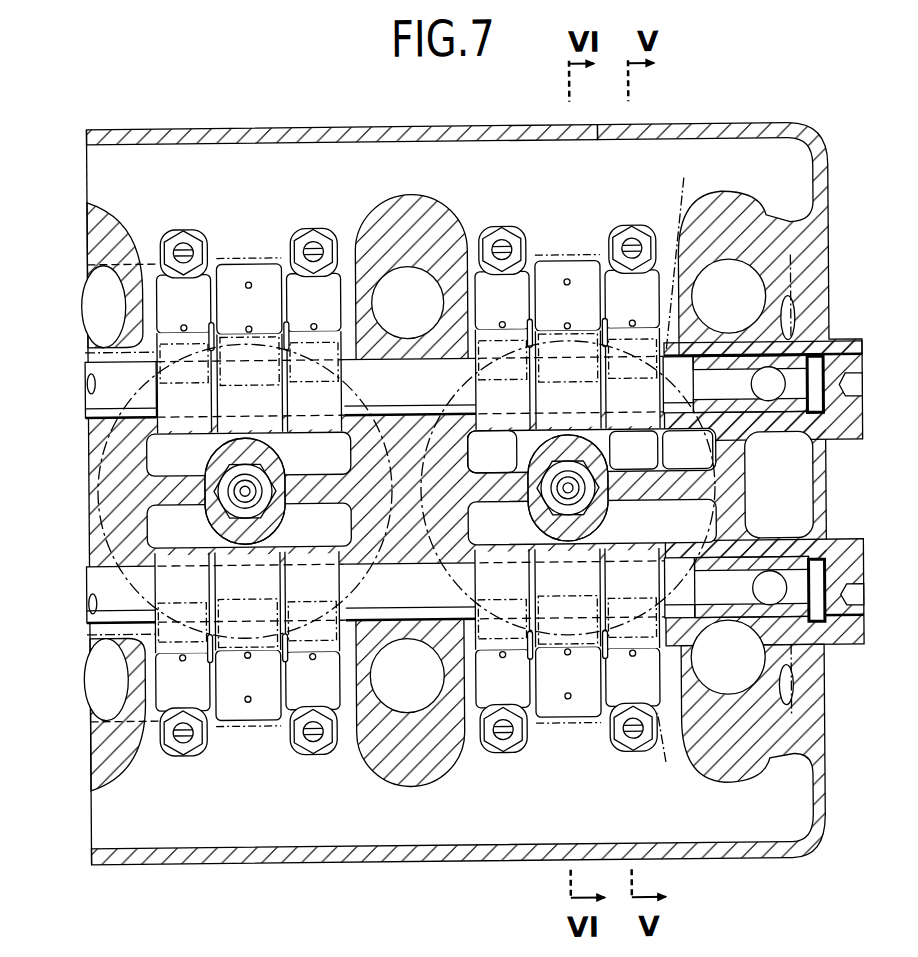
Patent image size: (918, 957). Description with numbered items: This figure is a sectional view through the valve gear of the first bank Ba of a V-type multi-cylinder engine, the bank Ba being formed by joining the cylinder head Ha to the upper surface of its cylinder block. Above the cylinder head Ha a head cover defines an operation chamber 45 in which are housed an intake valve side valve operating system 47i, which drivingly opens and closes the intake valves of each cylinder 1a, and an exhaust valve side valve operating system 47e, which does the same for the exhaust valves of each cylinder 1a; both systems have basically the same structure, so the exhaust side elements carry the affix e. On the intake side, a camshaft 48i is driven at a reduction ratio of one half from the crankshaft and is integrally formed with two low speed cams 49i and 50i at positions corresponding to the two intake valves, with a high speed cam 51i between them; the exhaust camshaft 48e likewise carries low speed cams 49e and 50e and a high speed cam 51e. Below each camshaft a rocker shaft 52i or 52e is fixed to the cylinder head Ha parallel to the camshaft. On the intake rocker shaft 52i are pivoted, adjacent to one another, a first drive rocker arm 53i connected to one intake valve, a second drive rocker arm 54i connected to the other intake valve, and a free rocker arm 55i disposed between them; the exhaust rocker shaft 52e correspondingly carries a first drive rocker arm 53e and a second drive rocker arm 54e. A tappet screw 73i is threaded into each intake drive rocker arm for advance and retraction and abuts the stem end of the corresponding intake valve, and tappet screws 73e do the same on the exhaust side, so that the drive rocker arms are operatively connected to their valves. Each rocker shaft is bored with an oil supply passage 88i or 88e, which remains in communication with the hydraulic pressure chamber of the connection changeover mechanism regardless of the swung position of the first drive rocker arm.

The cylinder 1a is at (102, 480).
The operation chamber 45 is at (255, 783).
The intake valve side valve operating system 47i is at (562, 241).
The exhaust valve side valve operating system 47e is at (563, 733).
The camshaft 48i is at (442, 224).
The camshaft 48e is at (377, 769).
The low speed cam 49i is at (688, 249).
The low speed cam 49e is at (670, 753).
The low speed cam 50i is at (512, 240).
The low speed cam 50e is at (523, 740).
The high speed cam 51i is at (577, 259).
The high speed cam 51e is at (588, 732).
The rocker shaft 52i is at (405, 357).
The rocker shaft 52e is at (404, 607).
The first drive rocker arm 53i is at (701, 417).
The first drive rocker arm 53e is at (667, 629).
The second drive rocker arm 54i is at (498, 408).
The second drive rocker arm 54e is at (468, 713).
The free rocker arm 55i is at (596, 426).
The tappet screw 73i is at (524, 241).
The tappet screw 73e is at (563, 661).
The oil supply passage 88i is at (722, 372).
The oil supply passage 88e is at (744, 581).
The cylinder head Ha is at (564, 122).
The first bank Ba is at (719, 125).